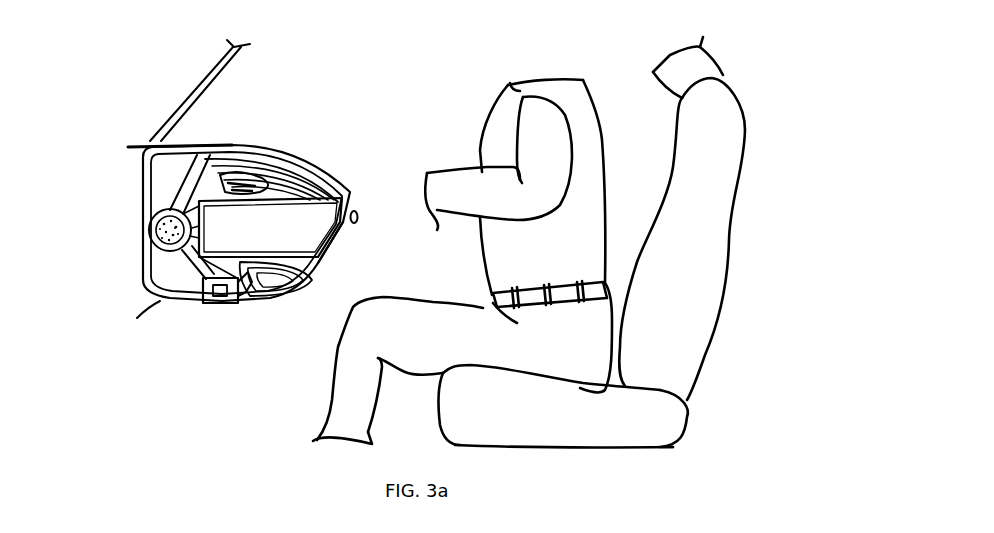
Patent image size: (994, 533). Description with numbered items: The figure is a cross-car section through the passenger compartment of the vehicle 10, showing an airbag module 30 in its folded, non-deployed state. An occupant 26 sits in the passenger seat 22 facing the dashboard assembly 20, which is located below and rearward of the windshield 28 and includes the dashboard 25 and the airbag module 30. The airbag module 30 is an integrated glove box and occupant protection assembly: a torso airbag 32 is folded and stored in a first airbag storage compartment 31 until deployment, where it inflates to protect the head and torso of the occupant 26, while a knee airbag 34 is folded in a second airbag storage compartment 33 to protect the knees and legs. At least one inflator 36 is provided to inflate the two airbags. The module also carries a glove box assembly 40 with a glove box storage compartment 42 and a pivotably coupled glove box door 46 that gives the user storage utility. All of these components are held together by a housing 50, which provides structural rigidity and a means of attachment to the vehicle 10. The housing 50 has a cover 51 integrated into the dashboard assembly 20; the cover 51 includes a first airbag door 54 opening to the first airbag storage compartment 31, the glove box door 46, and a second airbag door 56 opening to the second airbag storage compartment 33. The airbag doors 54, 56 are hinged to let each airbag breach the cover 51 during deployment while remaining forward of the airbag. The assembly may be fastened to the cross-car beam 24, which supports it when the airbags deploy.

The vehicle 10 is at (168, 53).
The dashboard assembly 20 is at (333, 153).
The passenger seat 22 is at (682, 280).
The cross-car beam 24 is at (197, 303).
The dashboard 25 is at (205, 141).
The occupant 26 is at (518, 85).
The windshield 28 is at (185, 103).
The airbag module 30 is at (120, 277).
The first airbag storage compartment 31 is at (207, 183).
The torso airbag 32 is at (243, 167).
The second airbag storage compartment 33 is at (238, 304).
The knee airbag 34 is at (247, 303).
The inflator 36 is at (138, 197).
The glove box assembly 40 is at (360, 215).
The glove box storage compartment 42 is at (279, 241).
The glove box door 46 is at (320, 250).
The housing 50 is at (138, 232).
The cover 51 is at (147, 165).
The first airbag door 54 is at (297, 157).
The second airbag door 56 is at (293, 303).